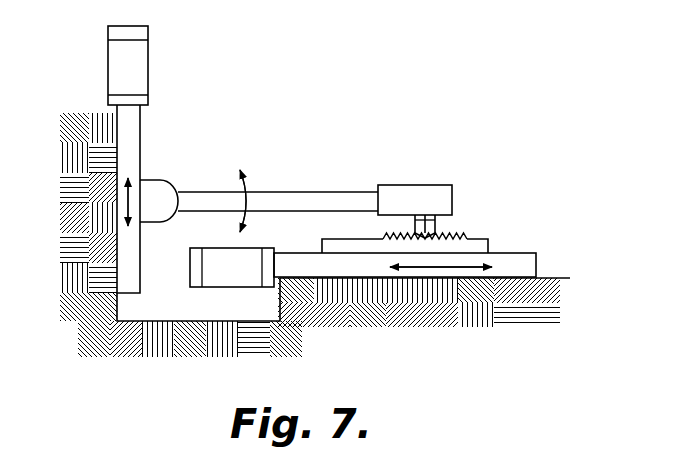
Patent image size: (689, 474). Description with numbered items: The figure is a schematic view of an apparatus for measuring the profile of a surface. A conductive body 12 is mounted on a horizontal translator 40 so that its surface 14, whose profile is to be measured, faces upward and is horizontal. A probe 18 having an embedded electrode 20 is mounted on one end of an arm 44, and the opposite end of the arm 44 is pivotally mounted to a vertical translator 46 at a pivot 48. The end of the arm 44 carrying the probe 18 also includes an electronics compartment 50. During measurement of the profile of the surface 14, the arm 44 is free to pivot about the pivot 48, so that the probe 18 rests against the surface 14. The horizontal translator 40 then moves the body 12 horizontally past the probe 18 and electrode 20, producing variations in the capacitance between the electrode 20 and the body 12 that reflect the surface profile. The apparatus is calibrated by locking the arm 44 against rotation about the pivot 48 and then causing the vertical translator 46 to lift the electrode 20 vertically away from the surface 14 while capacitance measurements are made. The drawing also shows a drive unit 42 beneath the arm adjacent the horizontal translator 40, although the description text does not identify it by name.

The conductive body 12 is at (488, 242).
The surface 14 is at (455, 232).
The probe 18 is at (415, 232).
The electrode 20 is at (430, 224).
The horizontal translator 40 is at (525, 266).
The drive motor 42 is at (282, 303).
The arm 44 is at (303, 198).
The vertical translator 46 is at (130, 127).
The pivot 48 is at (158, 203).
The electronics compartment 50 is at (427, 195).